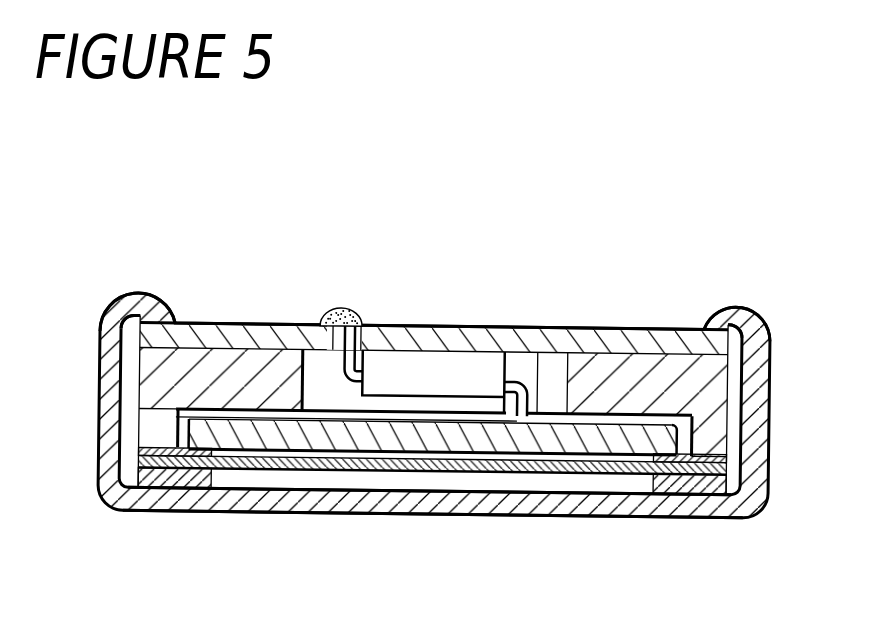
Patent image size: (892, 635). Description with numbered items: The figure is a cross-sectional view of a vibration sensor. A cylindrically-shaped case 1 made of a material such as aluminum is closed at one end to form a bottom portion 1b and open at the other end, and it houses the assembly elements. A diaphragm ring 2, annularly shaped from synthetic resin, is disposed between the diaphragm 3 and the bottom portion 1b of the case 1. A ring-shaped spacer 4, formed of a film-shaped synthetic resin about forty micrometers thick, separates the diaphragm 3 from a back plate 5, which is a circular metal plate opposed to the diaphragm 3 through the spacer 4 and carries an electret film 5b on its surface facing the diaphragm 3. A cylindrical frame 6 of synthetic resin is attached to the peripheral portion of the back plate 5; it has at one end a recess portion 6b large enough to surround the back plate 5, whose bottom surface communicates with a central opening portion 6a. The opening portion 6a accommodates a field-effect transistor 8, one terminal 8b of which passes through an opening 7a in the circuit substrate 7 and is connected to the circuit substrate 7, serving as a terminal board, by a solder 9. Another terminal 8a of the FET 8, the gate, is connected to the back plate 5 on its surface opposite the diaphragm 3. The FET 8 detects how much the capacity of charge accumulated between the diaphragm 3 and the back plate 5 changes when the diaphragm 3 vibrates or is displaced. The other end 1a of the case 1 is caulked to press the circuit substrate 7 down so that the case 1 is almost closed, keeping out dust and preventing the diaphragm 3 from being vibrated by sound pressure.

The case 1 is at (758, 375).
The other end of the case 1a is at (153, 292).
The bottom portion 1b is at (307, 514).
The diaphragm ring 2 is at (740, 492).
The diaphragm 3 is at (723, 472).
The spacer 4 is at (730, 458).
The back plate 5 is at (180, 430).
The electret film 5b is at (426, 452).
The frame 6 is at (167, 372).
The opening portion 6a is at (625, 368).
The recess portion 6b is at (180, 406).
The circuit substrate 7 is at (612, 343).
The opening 7a is at (332, 345).
The field-effect transistor 8 is at (415, 373).
The terminal 8a is at (537, 352).
The terminal 8b is at (340, 373).
The solder 9 is at (343, 302).